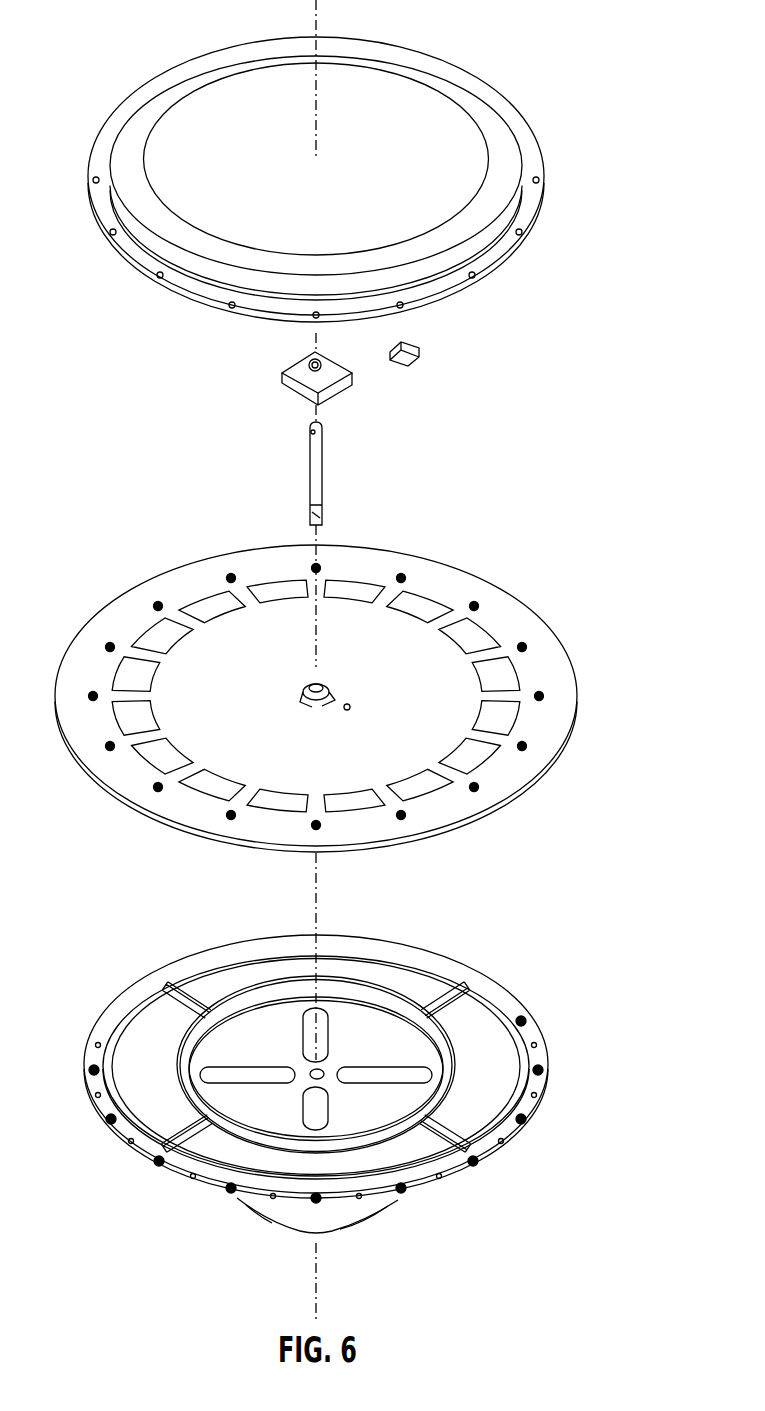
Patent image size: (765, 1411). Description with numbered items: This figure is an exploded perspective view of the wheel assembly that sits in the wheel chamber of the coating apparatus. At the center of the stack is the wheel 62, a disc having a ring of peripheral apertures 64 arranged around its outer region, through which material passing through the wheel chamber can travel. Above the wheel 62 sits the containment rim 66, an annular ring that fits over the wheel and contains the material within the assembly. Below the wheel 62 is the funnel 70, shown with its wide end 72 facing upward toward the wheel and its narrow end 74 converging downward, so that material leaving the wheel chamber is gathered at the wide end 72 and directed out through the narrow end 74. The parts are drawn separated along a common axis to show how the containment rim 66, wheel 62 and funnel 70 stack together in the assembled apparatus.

The wheel 62 is at (316, 680).
The peripheral apertures 64 is at (280, 803).
The containment rim 66 is at (435, 65).
The funnel 70 is at (364, 1077).
The wide end 72 is at (438, 973).
The narrow end 74 is at (377, 1213).